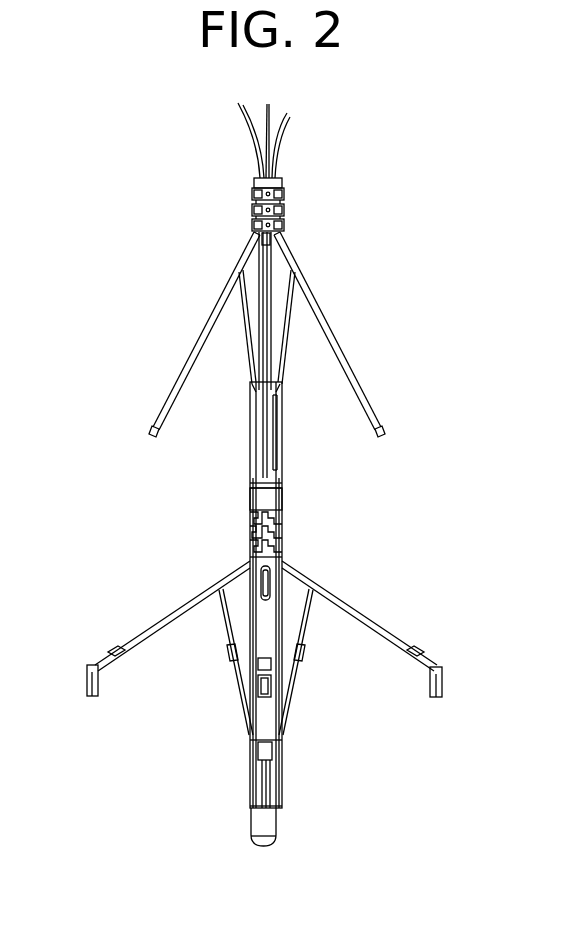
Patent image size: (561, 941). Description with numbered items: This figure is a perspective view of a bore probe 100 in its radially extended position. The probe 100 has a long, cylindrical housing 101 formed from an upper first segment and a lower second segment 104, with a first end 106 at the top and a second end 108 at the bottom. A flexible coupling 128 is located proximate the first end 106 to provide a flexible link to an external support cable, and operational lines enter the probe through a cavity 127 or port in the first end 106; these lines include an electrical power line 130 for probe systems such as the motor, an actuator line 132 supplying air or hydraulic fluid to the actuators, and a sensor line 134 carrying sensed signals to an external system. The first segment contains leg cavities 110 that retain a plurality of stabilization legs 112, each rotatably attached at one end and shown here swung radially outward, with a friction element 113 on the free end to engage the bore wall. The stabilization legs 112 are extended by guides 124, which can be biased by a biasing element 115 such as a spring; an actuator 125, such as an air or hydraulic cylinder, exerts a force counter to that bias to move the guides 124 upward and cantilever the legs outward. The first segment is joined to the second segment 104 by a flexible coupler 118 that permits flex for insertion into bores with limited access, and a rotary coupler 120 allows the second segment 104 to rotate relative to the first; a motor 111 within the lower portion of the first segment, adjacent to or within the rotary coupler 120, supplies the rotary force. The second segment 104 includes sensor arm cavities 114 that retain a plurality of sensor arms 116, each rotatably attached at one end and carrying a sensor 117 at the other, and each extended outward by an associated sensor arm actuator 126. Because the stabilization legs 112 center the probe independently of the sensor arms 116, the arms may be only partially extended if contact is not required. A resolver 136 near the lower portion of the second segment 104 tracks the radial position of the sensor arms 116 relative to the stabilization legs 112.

The probe 100 is at (428, 168).
The housing 101 is at (160, 518).
The second segment 104 is at (281, 758).
The first end 106 is at (284, 225).
The second end 108 is at (277, 836).
The leg cavities 110 is at (283, 452).
The motor 111 is at (283, 503).
The stabilization legs 112 is at (200, 347).
The friction element 113 is at (150, 428).
The sensor arm cavities 114 is at (290, 645).
The biasing element 115 is at (285, 296).
The sensor arms 116 is at (172, 607).
The sensor 117 is at (86, 680).
The flexible coupler 118 is at (282, 537).
The rotary coupler 120 is at (250, 503).
The guides 124 is at (243, 340).
The actuator 125 is at (282, 412).
The sensor arm actuators 126 is at (226, 674).
The cavity 127 is at (253, 180).
The flexible coupling 128 is at (284, 183).
The electrical power line 130 is at (246, 122).
The actuator line 132 is at (270, 112).
The sensor line 134 is at (288, 134).
The resolver 136 is at (251, 818).